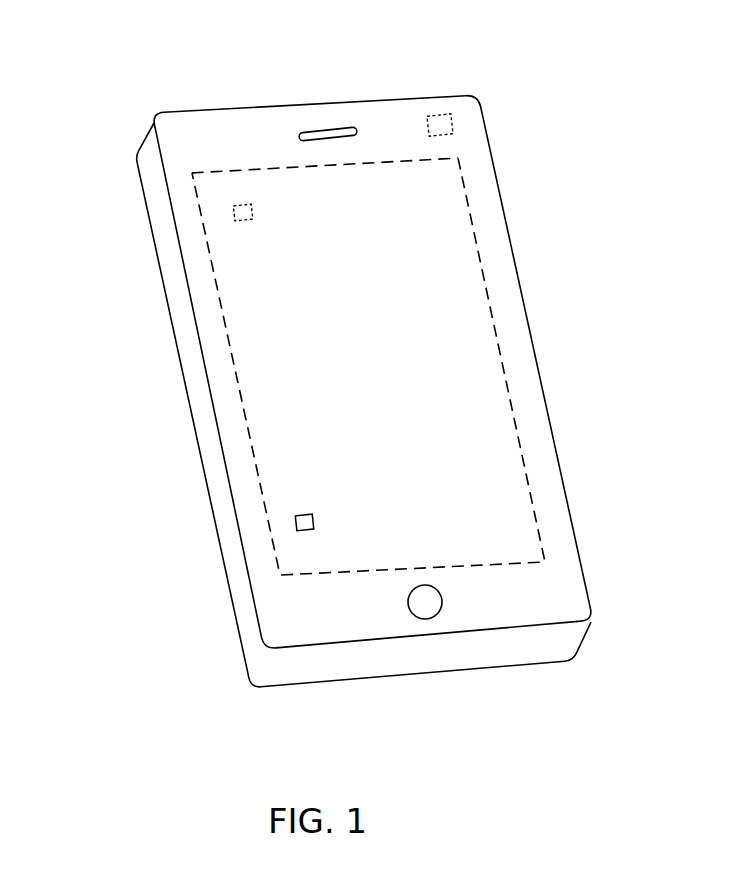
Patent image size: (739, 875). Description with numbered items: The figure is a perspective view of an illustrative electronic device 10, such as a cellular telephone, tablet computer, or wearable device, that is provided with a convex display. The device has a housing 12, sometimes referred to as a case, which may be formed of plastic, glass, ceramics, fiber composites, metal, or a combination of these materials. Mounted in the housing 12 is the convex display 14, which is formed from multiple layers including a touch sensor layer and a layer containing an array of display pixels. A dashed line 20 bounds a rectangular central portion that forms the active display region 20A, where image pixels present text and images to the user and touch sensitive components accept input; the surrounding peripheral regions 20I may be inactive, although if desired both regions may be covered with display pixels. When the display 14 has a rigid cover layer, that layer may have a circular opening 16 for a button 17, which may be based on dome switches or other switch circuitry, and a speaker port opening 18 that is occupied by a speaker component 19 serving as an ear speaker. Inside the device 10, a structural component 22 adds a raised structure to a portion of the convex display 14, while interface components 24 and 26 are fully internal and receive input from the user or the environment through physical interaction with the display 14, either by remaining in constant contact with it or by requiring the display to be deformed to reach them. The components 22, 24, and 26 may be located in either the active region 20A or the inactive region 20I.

The electronic device 10 is at (96, 44).
The housing 12 is at (153, 187).
The convex display 14 is at (497, 457).
The circular opening 16 is at (442, 602).
The button 17 is at (423, 610).
The speaker port opening 18 is at (350, 130).
The speaker component 19 is at (318, 133).
The dashed line 20 is at (479, 248).
The active display region 20A is at (258, 407).
The inactive peripheral region 20I is at (252, 132).
The structural component 22 is at (295, 520).
The interface component 24 is at (237, 212).
The interface component 26 is at (452, 125).